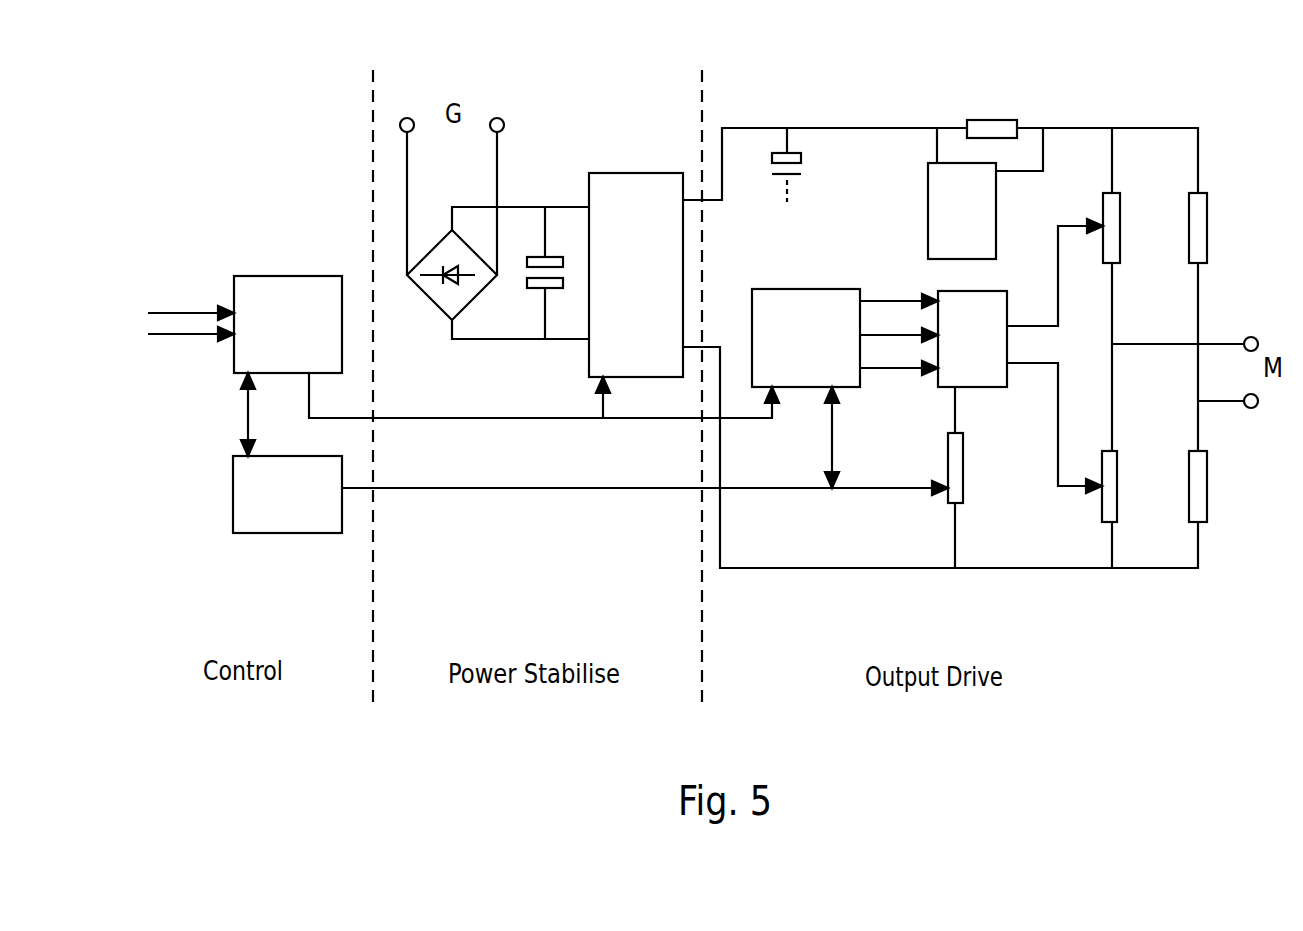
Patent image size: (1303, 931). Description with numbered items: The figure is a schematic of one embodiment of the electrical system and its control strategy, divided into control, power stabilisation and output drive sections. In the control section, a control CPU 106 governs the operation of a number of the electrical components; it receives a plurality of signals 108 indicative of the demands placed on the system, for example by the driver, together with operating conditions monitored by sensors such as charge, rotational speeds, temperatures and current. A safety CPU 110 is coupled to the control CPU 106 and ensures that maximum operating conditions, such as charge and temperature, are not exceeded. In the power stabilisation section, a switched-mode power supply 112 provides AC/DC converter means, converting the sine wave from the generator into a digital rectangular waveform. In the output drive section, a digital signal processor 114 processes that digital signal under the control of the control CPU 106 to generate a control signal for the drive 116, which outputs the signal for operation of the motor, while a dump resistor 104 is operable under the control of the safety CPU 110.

The dump resistor 104 is at (962, 472).
The control CPU 106 is at (289, 276).
The signals 108 is at (187, 309).
The safety CPU 110 is at (283, 533).
The switched-mode power supply 112 is at (652, 173).
The digital signal processor 114 is at (773, 289).
The drive 116 is at (957, 291).